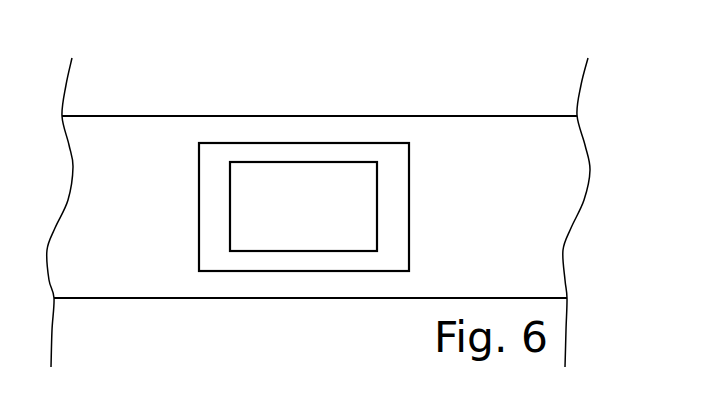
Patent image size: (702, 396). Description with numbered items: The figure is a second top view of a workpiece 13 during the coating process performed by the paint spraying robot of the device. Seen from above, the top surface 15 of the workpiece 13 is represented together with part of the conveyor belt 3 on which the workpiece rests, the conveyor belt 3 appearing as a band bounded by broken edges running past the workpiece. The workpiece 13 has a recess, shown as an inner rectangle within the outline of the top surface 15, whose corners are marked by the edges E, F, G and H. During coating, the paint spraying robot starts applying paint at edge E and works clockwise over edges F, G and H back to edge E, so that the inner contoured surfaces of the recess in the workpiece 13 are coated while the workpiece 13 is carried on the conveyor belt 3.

The conveyor belt 3 is at (556, 165).
The workpiece 13 is at (288, 152).
The top surface 15 is at (305, 207).